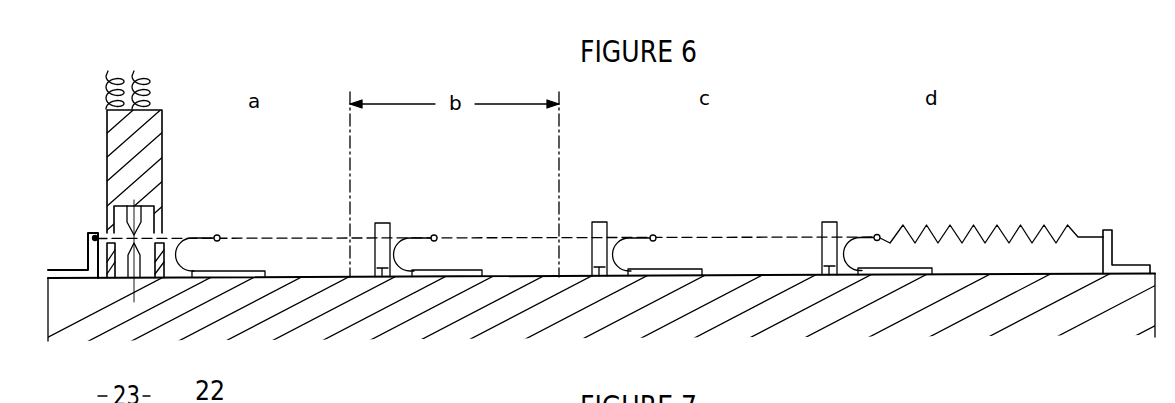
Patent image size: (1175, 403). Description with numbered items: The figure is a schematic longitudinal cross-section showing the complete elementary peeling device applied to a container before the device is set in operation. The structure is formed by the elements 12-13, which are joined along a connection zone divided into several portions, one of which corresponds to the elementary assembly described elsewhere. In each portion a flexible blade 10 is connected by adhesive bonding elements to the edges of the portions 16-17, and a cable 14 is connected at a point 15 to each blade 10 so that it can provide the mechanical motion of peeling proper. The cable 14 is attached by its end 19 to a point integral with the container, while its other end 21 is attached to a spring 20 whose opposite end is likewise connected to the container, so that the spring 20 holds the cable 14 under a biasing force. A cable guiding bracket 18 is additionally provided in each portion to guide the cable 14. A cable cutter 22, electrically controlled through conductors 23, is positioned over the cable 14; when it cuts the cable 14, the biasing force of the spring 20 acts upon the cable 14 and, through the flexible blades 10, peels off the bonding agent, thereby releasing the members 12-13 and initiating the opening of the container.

The flexible blade 10 is at (397, 250).
The structural elements 12-13 is at (1137, 307).
The cable 14 is at (311, 236).
The cable connection point 15 is at (219, 236).
The bonded portions 16-17 is at (225, 279).
The cable guiding bracket 18 is at (383, 278).
The cable end 19 is at (95, 238).
The spring 20 is at (1020, 225).
The cable end 21 is at (878, 234).
The cable cutter 22 is at (162, 110).
The conductors 23 is at (150, 63).